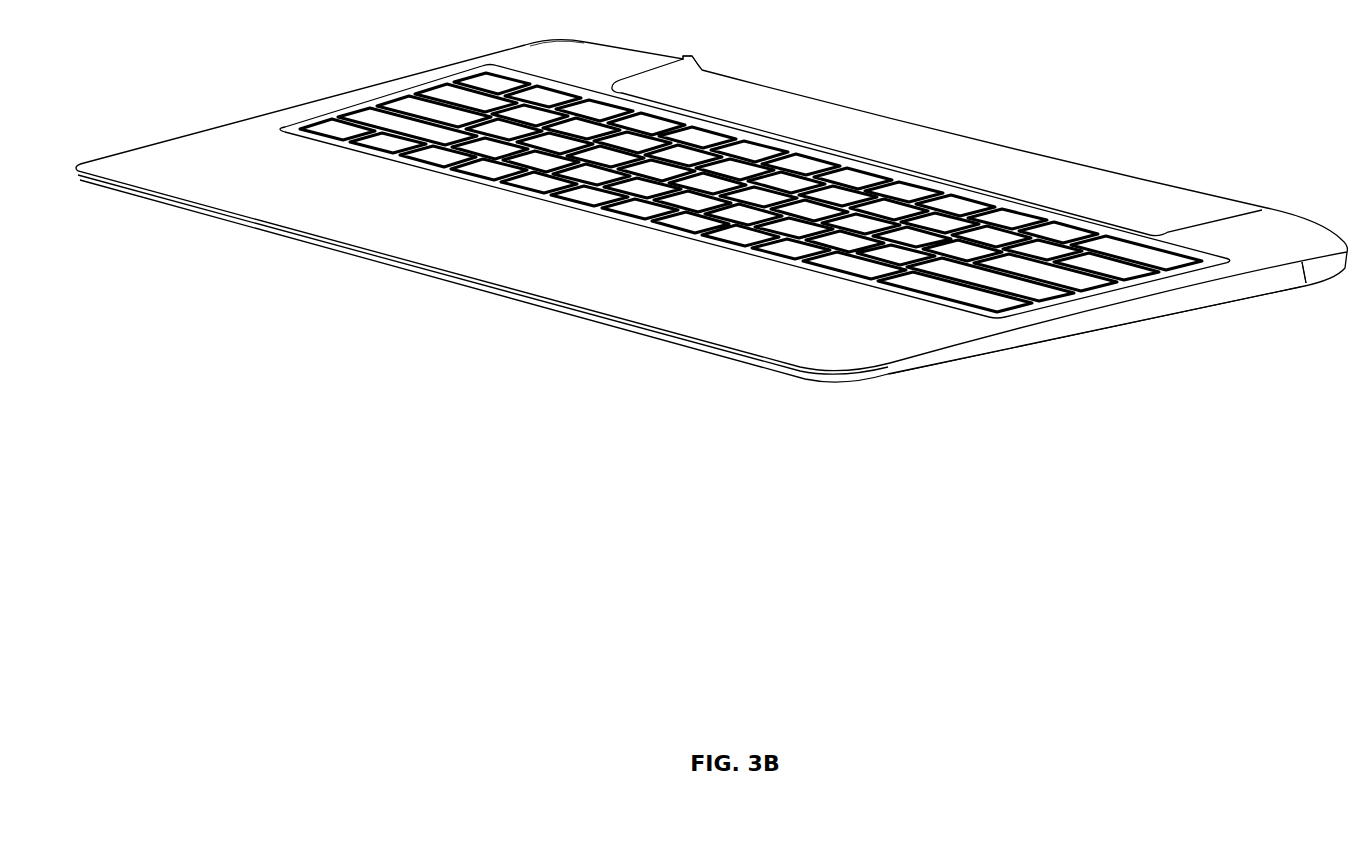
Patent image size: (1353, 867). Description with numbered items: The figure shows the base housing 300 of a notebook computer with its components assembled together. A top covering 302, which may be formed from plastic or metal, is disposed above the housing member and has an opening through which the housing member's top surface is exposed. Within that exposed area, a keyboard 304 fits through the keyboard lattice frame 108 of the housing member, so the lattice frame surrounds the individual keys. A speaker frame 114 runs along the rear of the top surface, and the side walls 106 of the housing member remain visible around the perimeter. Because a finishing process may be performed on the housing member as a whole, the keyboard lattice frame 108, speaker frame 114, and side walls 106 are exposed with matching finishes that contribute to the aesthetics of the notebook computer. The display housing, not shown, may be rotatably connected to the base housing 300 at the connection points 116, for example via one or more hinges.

The base housing 300 is at (1137, 70).
The side walls 106 is at (1237, 302).
The keyboard lattice frame 108 is at (276, 128).
The speaker frame 114 is at (818, 127).
The connection points 116 is at (701, 67).
The top covering 302 is at (612, 53).
The keyboard 304 is at (1045, 298).